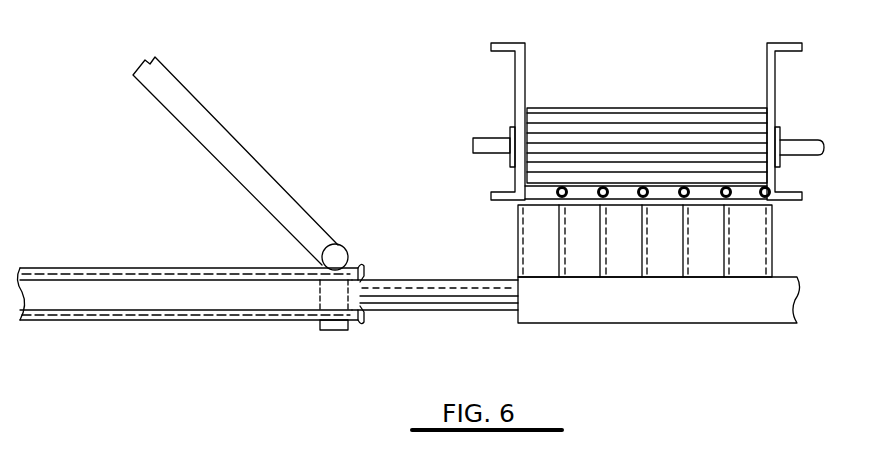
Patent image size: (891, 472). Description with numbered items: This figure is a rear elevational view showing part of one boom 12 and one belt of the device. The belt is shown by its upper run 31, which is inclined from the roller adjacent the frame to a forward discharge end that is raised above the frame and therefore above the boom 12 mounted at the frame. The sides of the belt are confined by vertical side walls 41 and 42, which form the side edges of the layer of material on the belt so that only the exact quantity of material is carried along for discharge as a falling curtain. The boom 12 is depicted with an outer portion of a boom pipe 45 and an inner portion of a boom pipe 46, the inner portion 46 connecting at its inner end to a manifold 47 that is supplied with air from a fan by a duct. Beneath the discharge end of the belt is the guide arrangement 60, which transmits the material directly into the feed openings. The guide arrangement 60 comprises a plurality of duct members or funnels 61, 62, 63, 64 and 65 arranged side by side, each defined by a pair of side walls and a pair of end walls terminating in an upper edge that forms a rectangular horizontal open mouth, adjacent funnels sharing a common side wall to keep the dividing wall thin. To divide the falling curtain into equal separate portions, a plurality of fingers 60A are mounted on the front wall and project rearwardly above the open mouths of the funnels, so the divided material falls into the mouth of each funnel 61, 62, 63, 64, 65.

The boom 12 is at (135, 268).
The upper run 31 is at (657, 112).
The vertical side wall 41 is at (528, 73).
The vertical side wall 42 is at (767, 82).
The outer portion of boom pipe 45 is at (123, 318).
The inner portion of boom pipe 46 is at (423, 312).
The manifold 47 is at (659, 335).
The guide arrangement 60 is at (781, 238).
The fingers 60A is at (560, 196).
The duct member or funnel 61 is at (578, 267).
The duct member or funnel 62 is at (625, 268).
The duct member or funnel 63 is at (665, 268).
The duct member or funnel 64 is at (707, 268).
The duct member or funnel 65 is at (748, 262).